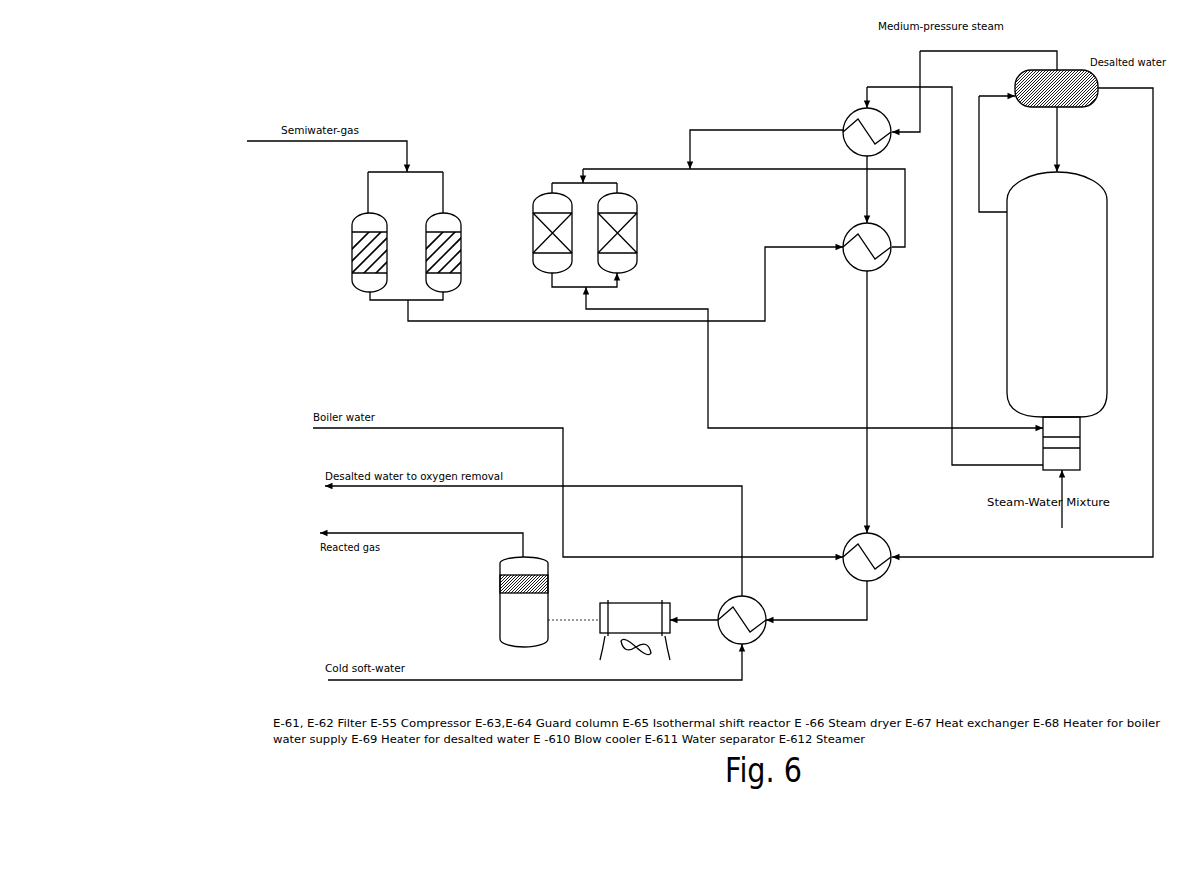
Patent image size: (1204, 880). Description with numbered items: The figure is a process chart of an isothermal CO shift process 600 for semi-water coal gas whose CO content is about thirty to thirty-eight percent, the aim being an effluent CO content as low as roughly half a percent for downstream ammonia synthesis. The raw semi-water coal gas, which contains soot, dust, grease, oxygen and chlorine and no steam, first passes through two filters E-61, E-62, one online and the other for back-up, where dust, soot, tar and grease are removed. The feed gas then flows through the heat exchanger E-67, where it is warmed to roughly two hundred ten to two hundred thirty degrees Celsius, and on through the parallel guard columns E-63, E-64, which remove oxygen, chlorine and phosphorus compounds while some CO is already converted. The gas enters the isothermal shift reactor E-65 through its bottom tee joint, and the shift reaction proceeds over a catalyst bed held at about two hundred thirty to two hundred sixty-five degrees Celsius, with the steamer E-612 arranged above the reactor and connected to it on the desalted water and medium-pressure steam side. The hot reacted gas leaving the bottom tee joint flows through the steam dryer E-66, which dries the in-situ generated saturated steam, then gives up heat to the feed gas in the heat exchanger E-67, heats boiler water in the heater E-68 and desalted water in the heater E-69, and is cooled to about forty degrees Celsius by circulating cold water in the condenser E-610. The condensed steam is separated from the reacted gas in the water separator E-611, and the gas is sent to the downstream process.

The isothermal CO shift process for semi-water coal gas 600 is at (278, 83).
The filter E-61 is at (370, 265).
The filter E-62 is at (444, 267).
The guard column E-63 is at (552, 249).
The guard column E-64 is at (617, 250).
The isothermal shift reactor E-65 is at (1057, 321).
The steam dryer E-66 is at (853, 131).
The heat exchanger E-67 is at (863, 255).
The heater for boiler water supply E-68 is at (860, 552).
The boiler desalted water heater E-69 is at (761, 616).
The condenser E-610 is at (635, 640).
The water separator E-611 is at (524, 614).
The steamer E-612 is at (1040, 88).